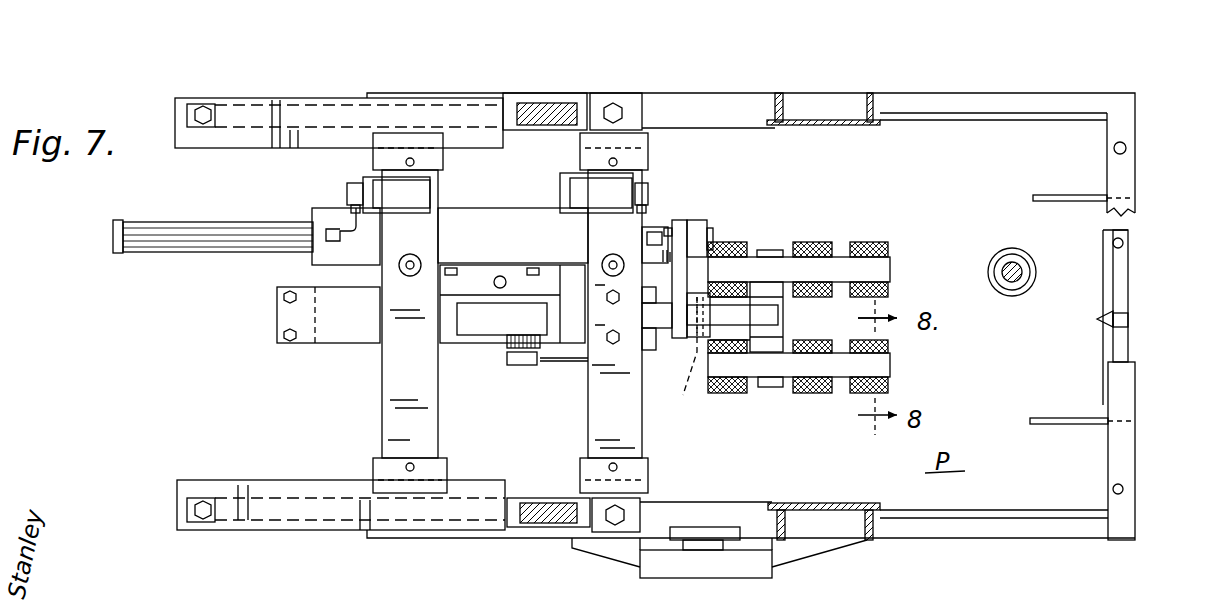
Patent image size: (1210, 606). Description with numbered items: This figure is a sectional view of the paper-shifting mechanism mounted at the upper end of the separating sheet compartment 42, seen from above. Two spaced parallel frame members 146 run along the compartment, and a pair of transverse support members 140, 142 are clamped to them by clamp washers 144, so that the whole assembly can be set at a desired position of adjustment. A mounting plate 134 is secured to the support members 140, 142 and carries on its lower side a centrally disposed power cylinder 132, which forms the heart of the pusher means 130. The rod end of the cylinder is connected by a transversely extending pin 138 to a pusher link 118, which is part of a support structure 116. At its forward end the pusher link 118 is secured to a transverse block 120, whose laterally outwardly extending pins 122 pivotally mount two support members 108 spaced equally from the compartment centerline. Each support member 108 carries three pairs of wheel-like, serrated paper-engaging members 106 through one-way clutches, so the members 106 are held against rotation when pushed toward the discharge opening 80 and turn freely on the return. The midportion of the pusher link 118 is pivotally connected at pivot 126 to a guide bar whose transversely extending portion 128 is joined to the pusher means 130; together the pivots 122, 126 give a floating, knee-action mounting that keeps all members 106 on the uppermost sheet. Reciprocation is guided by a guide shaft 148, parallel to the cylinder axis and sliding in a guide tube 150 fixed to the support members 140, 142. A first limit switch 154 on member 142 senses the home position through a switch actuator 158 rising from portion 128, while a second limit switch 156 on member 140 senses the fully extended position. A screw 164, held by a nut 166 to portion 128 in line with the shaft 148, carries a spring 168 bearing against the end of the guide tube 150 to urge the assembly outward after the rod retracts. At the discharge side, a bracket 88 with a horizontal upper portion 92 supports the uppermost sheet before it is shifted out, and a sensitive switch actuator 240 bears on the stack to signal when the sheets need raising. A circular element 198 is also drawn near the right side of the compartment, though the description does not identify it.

The separating sheet compartment 42 is at (1010, 142).
The discharge opening 80 is at (1132, 277).
The bracket 88 is at (1131, 322).
The upper portion of bracket 92 is at (1098, 322).
The paper-engaging members 106 is at (890, 243).
The support member 108 is at (882, 268).
The support structure 116 is at (760, 304).
The pusher link 118 is at (779, 318).
The transverse block 120 is at (784, 335).
The pins 122 is at (773, 390).
The pivot 126 is at (676, 350).
The transversely extending portion of guide bar 128 is at (652, 272).
The pusher means 130 is at (527, 370).
The power cylinder 132 is at (315, 340).
The mounting plate 134 is at (352, 327).
The pin 138 is at (647, 352).
The support member 140 is at (393, 410).
The support member 142 is at (603, 412).
The clamp washers 144 is at (372, 160).
The frame members 146 is at (263, 150).
The guide shaft 148 is at (226, 230).
The guide tube 150 is at (507, 217).
The first limit switch 154 is at (582, 198).
The second limit switch 156 is at (418, 205).
The switch actuator 158 is at (681, 220).
The screw 164 is at (714, 234).
The nut 166 is at (703, 222).
The spring 168 is at (673, 220).
The knob 198 is at (1030, 263).
The switch actuator 240 is at (558, 362).